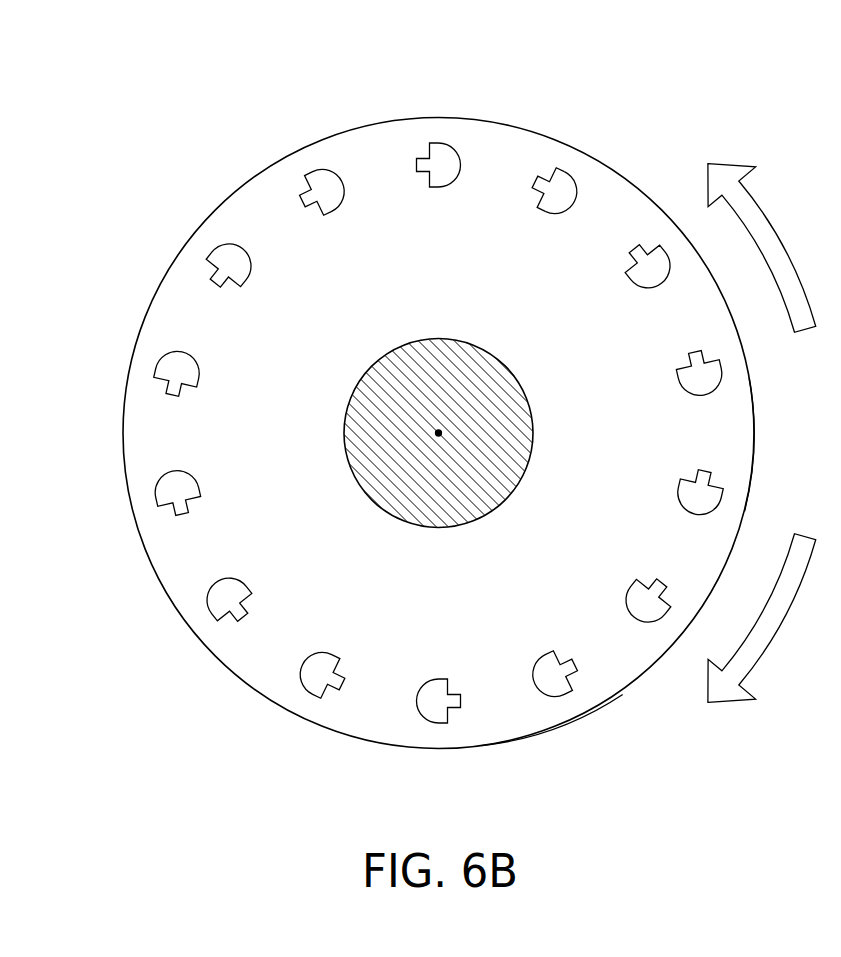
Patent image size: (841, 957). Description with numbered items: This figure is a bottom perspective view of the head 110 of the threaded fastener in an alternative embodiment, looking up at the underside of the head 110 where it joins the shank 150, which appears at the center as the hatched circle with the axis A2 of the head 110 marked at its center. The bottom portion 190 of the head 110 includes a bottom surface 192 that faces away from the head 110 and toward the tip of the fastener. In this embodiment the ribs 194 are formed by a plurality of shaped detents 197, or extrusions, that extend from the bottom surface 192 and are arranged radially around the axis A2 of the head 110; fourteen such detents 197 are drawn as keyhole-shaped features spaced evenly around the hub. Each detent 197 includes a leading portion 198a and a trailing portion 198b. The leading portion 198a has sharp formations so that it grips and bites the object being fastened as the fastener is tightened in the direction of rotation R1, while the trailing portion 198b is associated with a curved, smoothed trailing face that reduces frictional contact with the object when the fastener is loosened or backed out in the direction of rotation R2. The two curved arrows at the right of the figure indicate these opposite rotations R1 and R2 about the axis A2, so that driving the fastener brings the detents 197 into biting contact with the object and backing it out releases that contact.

The head 110 is at (362, 127).
The shank 150 is at (440, 497).
The bottom portion 190 is at (530, 737).
The bottom surface 192 is at (650, 452).
The ribs 194 is at (302, 672).
The shaped detents 197 is at (332, 182).
The leading portion 198a is at (533, 195).
The trailing portion 198b is at (578, 193).
The axis of the head A2 is at (436, 433).
The rotation R1 is at (762, 248).
The rotation R2 is at (762, 618).